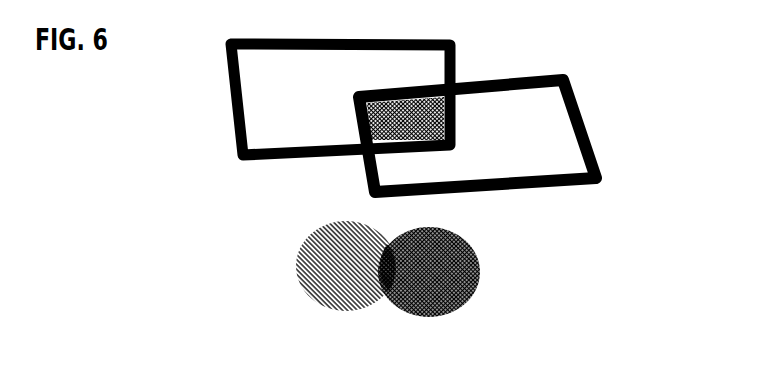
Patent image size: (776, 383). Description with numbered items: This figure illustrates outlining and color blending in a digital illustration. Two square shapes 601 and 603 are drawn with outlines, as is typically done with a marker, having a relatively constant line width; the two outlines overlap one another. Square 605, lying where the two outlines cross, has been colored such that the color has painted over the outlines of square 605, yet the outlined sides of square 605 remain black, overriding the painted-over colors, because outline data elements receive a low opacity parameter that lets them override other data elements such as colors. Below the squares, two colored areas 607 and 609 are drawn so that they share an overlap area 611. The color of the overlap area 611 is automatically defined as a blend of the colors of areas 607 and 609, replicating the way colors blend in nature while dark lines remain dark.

The square shape 601 is at (236, 132).
The square shape 603 is at (590, 142).
The square 605 is at (422, 122).
The colored area 607 is at (308, 277).
The colored area 609 is at (482, 277).
The overlap area 611 is at (397, 277).